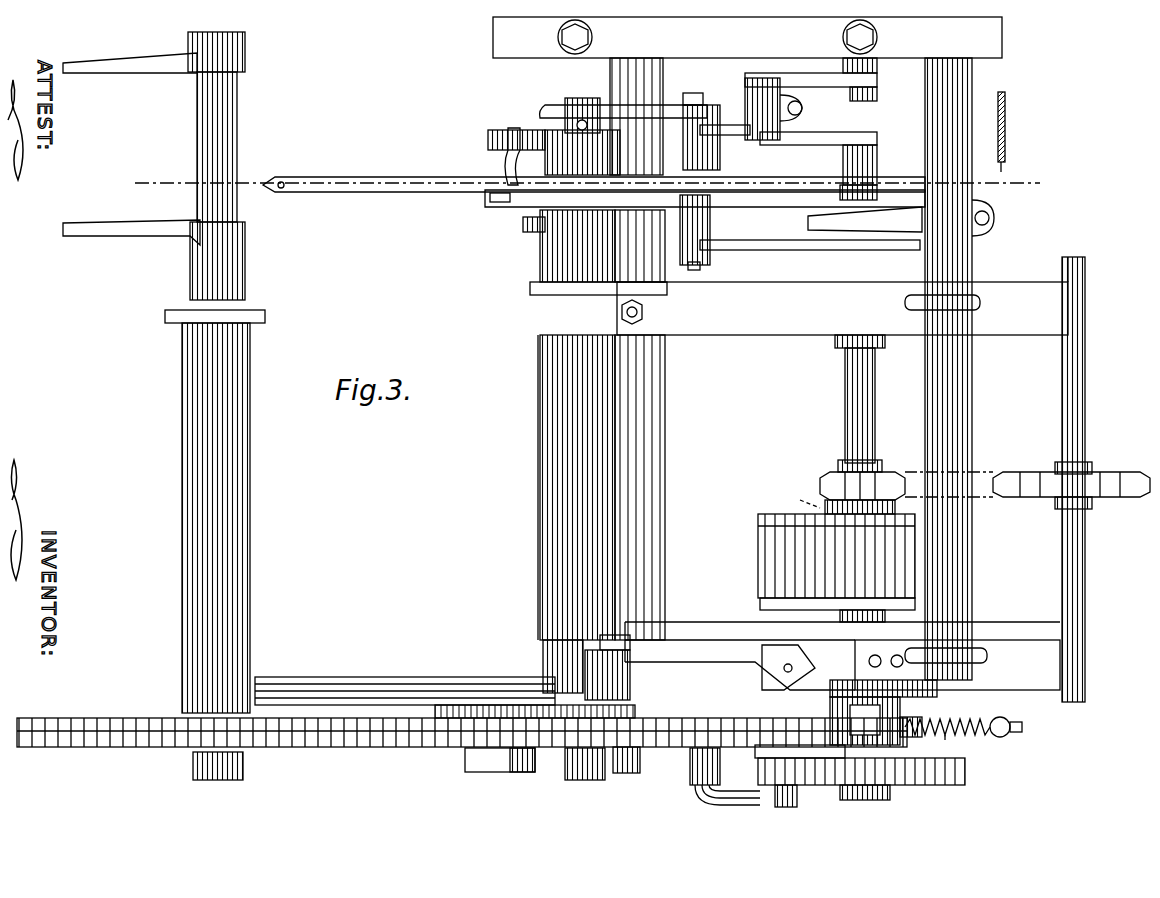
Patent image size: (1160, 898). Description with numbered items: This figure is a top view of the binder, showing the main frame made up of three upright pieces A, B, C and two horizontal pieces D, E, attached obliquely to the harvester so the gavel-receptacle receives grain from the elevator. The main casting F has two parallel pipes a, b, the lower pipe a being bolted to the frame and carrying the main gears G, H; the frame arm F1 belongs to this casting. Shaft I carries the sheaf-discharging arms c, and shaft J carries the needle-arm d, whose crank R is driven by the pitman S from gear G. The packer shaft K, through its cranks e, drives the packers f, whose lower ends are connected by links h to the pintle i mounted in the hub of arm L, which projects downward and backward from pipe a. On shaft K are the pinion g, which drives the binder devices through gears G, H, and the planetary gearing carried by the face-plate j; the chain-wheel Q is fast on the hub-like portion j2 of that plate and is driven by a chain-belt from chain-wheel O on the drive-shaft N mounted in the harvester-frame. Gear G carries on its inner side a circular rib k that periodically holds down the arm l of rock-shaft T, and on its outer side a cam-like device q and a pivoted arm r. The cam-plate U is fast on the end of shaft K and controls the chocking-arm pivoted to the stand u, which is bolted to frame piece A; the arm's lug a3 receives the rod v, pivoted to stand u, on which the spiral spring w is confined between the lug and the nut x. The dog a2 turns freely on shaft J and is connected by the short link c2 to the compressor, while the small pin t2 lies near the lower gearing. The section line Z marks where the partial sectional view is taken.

The upright frame piece A is at (957, 663).
The upright frame piece B is at (842, 308).
The upright frame piece C is at (747, 37).
The horizontal frame piece D is at (645, 349).
The horizontal frame piece E is at (949, 369).
The main casting F is at (565, 667).
The frame arm F1 is at (405, 692).
The main gear G is at (842, 669).
The main gear H is at (462, 747).
The shaft I is at (215, 177).
The needle-arm shaft J is at (582, 107).
The packer shaft K is at (868, 805).
The arm L is at (705, 209).
The drive-shaft N is at (1081, 479).
The chain-wheel O is at (1027, 472).
The chain-wheel Q is at (852, 484).
The crank R is at (660, 802).
The pitman S is at (727, 807).
The rock-shaft T is at (527, 487).
The cam-plate U is at (861, 771).
The section line Z is at (593, 142).
The lower pipe a is at (595, 451).
The dog or angle-lever a2 is at (560, 152).
The projecting lug a3 is at (838, 722).
The upper pipe b is at (216, 551).
The sheaf-discharging arm c is at (131, 140).
The short pitman or link c2 is at (501, 156).
The needle-arm d is at (594, 173).
The crank e is at (821, 128).
The packer f is at (731, 160).
The pinion g is at (916, 736).
The pivoted rod or link h is at (475, 710).
The pintle i is at (700, 174).
The face-plate j is at (832, 561).
The hub-like portion j2 is at (799, 496).
The circular rib k is at (810, 193).
The arm l is at (800, 750).
The cam-like device q is at (500, 765).
The pivoted arm r is at (596, 763).
The pin t2 is at (800, 790).
The stand u is at (883, 680).
The rod v is at (947, 713).
The spiral spring w is at (957, 740).
The nut x is at (1006, 714).